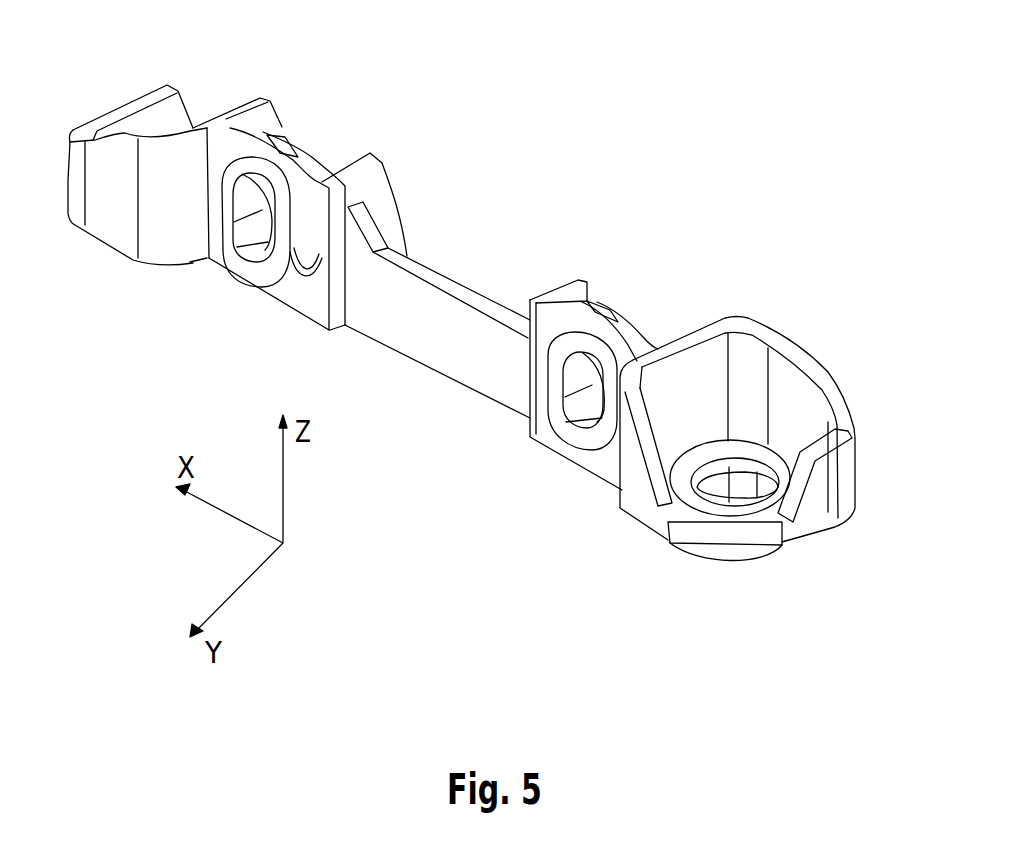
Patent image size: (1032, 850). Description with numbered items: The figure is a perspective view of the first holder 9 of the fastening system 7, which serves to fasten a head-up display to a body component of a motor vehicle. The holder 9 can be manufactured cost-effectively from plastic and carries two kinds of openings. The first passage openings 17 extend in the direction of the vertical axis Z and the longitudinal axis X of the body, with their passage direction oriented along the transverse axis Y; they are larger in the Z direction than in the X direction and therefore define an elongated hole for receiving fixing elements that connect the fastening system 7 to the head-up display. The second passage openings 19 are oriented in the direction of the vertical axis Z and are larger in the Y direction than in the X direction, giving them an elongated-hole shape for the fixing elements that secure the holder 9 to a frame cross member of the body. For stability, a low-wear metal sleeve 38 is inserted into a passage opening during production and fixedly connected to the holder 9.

The fastening system 7 is at (661, 161).
The first holder 9 is at (679, 221).
The first passage opening 17 is at (258, 232).
The second passage opening 19 is at (199, 93).
The metal sleeve 38 is at (690, 493).